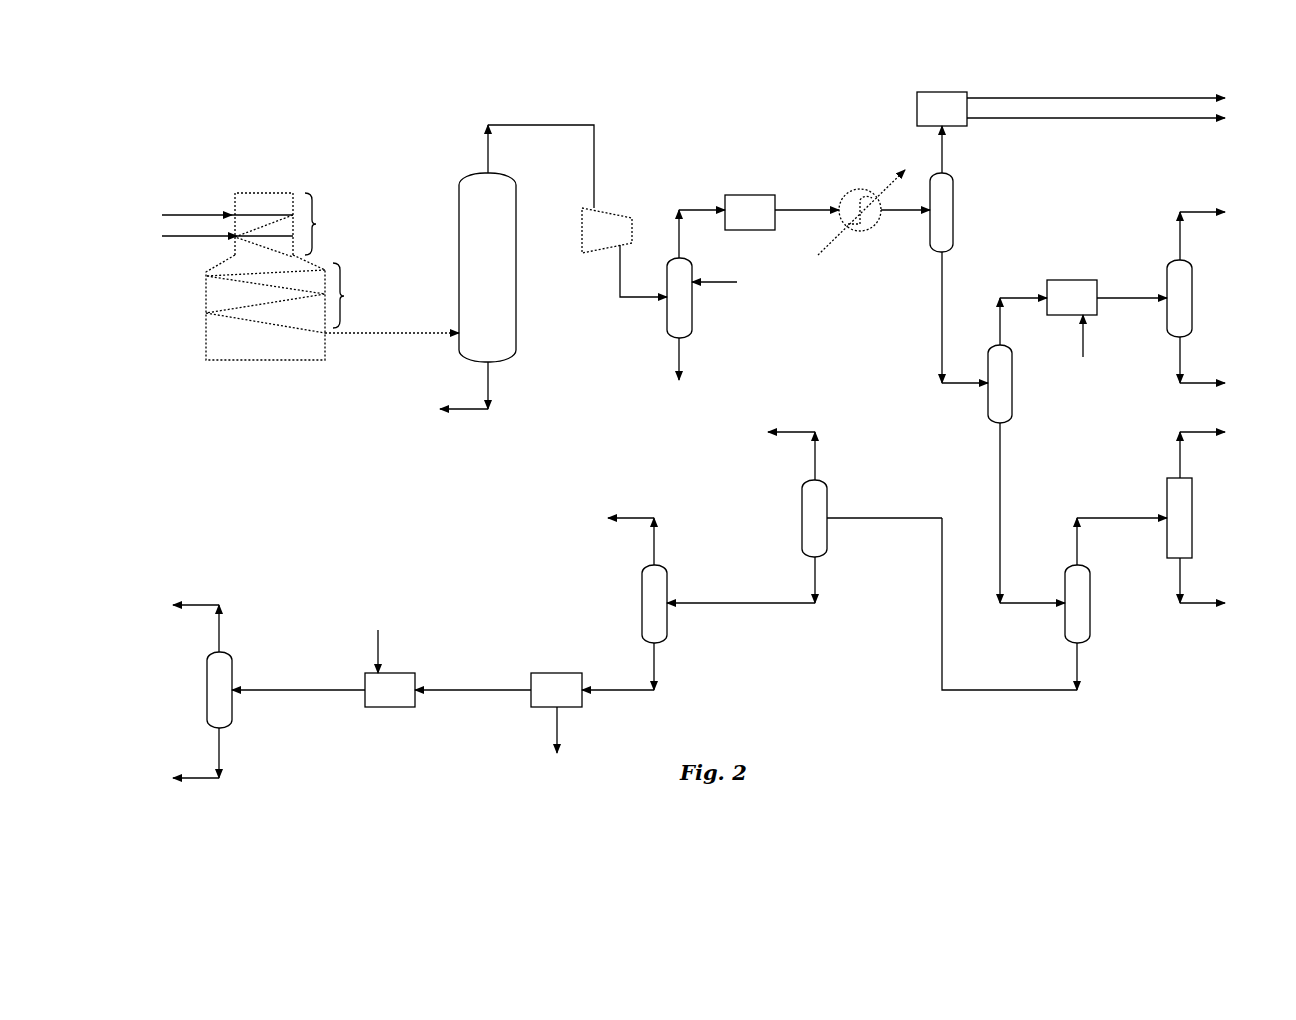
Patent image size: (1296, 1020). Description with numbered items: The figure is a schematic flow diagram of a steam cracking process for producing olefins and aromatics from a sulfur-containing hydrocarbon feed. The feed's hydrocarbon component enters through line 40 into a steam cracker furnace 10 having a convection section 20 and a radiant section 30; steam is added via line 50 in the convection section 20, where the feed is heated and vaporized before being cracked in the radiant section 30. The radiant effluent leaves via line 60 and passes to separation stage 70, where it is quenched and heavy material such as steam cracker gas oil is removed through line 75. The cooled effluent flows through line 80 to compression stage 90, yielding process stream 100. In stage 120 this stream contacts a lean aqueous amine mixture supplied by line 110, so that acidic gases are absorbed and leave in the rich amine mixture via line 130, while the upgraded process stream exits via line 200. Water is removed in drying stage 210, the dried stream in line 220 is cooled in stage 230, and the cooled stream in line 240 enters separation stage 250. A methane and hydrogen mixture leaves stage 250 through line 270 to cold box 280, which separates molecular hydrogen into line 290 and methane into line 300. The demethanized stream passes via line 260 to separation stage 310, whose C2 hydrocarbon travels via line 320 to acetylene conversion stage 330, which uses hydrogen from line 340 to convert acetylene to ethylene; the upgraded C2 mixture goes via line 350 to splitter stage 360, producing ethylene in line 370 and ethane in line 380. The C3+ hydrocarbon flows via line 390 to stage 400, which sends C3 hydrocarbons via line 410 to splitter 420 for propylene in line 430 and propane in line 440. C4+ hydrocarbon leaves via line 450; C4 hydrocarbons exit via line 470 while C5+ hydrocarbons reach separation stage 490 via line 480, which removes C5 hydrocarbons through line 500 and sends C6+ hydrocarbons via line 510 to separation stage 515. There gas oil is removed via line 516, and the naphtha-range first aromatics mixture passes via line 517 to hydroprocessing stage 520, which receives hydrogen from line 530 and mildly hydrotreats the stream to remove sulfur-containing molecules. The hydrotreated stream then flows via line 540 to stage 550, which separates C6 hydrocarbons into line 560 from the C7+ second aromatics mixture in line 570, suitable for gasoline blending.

The steam cracker furnace 10 is at (206, 343).
The convection section 20 is at (327, 224).
The radiant section 30 is at (357, 295).
The line 40 is at (178, 212).
The line 50 is at (182, 240).
The line 60 is at (388, 337).
The separation stage 70 is at (459, 232).
The line 75 is at (490, 380).
The line 80 is at (486, 157).
The compression stage 90 is at (614, 212).
The process stream 100 is at (618, 276).
The line 110 is at (720, 285).
The stage 120 is at (666, 315).
The line 130 is at (682, 356).
The line 200 is at (694, 208).
The stage 210 is at (750, 193).
The line 220 is at (808, 208).
The stage 230 is at (856, 188).
The line 240 is at (898, 214).
The separation stage 250 is at (954, 209).
The line 260 is at (940, 330).
The line 270 is at (944, 156).
The cold box 280 is at (917, 106).
The line 290 is at (1108, 98).
The line 300 is at (1108, 118).
The separation stage 310 is at (1013, 401).
The line 320 is at (1016, 296).
The acetylene conversion stage 330 is at (1066, 280).
The line 340 is at (1086, 344).
The line 350 is at (1124, 296).
The separation stage 360 is at (1194, 299).
The line 370 is at (1182, 241).
The line 380 is at (1182, 355).
The line 390 is at (1002, 485).
The stage 400 is at (1092, 619).
The line 410 is at (1126, 516).
The splitter 420 is at (1194, 527).
The line 430 is at (1182, 463).
The line 440 is at (1182, 575).
The line 450 is at (1080, 660).
The line 470 is at (817, 462).
The line 480 is at (818, 575).
The separation stage 490 is at (641, 585).
The line 500 is at (657, 551).
The line 510 is at (657, 660).
The separation stage 515 is at (557, 672).
The line 516 is at (560, 720).
The line 517 is at (480, 688).
The hydroprocessing stage 520 is at (390, 708).
The line 530 is at (381, 641).
The line 540 is at (300, 688).
The stage 550 is at (206, 672).
The line 560 is at (222, 632).
The line 570 is at (222, 750).